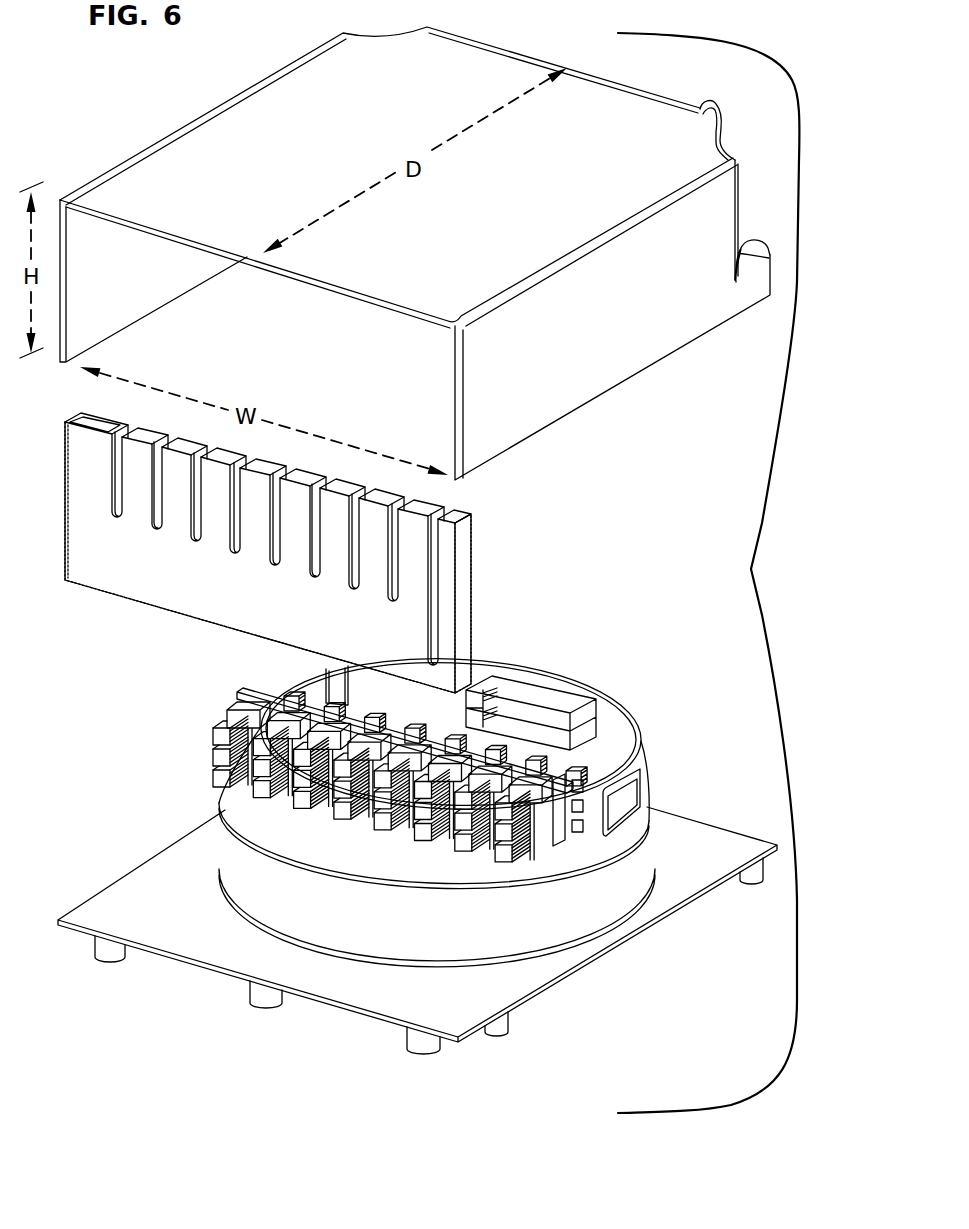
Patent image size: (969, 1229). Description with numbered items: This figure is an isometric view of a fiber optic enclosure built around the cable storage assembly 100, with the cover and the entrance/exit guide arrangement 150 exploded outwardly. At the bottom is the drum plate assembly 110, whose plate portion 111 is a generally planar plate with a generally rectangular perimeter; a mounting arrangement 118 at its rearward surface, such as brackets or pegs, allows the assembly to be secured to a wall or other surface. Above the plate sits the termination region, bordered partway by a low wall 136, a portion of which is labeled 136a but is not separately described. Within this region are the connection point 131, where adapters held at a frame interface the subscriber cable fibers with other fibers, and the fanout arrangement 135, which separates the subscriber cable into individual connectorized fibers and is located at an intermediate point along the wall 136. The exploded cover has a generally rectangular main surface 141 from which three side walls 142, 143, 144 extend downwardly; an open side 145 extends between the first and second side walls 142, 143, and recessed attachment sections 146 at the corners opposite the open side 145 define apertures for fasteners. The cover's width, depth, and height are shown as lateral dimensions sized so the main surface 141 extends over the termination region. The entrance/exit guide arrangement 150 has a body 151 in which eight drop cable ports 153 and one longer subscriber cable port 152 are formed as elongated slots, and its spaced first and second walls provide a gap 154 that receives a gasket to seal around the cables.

The cable storage assembly 100 is at (721, 573).
The drum plate assembly 110 is at (417, 930).
The plate portion 111 is at (668, 917).
The mounting arrangement 118 is at (507, 1027).
The connection point 131 is at (235, 697).
The fanout arrangement 135 is at (514, 688).
The wall 136 is at (583, 680).
The spool tab 136a is at (633, 796).
The main surface 141 is at (536, 199).
The first side wall 142 is at (622, 310).
The second side wall 143 is at (124, 266).
The third side wall 144 is at (711, 126).
The open side 145 is at (343, 287).
The attachment sections 146 is at (743, 242).
The entrance/exit guide arrangement 150 is at (244, 537).
The body 151 is at (158, 593).
The subscriber cable port 152 is at (447, 642).
The drop cable ports 153 is at (117, 514).
The gap 154 is at (93, 418).